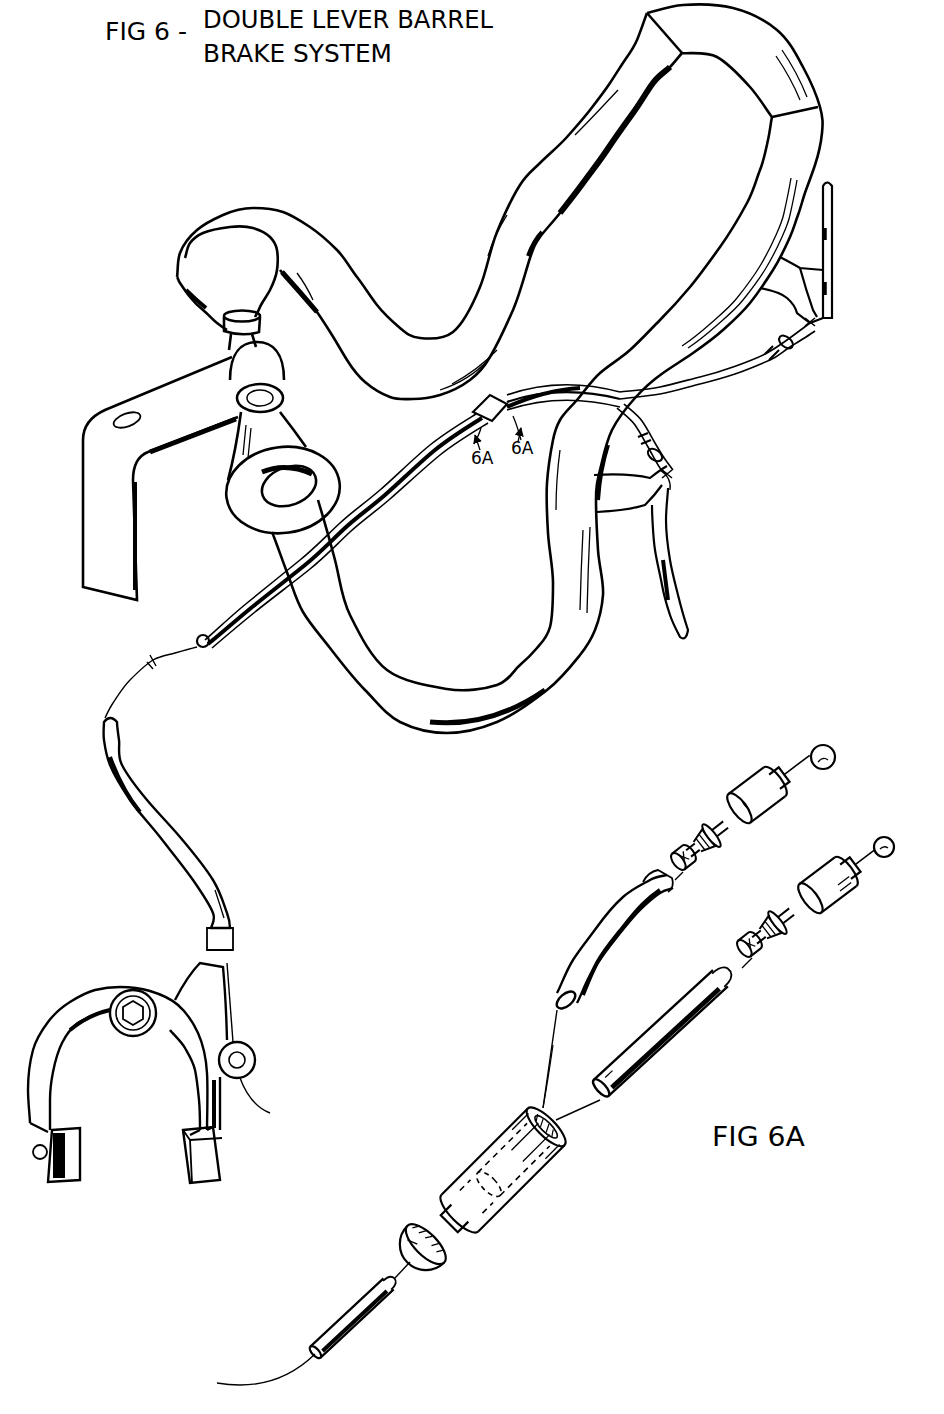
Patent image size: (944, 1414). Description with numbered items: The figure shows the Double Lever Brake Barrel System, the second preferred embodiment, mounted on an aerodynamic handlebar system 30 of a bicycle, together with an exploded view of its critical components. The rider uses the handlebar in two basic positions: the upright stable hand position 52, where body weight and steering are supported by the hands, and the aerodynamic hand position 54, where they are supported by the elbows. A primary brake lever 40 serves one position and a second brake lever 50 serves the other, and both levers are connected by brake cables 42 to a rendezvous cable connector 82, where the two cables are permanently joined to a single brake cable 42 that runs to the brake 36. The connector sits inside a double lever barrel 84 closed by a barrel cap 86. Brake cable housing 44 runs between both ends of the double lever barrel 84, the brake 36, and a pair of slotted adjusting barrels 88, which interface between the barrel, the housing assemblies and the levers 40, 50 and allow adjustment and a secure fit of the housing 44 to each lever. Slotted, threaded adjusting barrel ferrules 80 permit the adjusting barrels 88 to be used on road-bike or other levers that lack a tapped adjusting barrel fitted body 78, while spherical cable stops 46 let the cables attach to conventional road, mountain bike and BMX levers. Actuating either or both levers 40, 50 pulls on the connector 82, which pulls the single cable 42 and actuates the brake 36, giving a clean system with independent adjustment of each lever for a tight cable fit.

In FIG. 6, the aerodynamic handlebar system 30 is at (404, 168).
In FIG. 6, the brake 36 is at (86, 989).
In FIG. 6, the primary brake lever 40 is at (684, 562).
In FIG. 6A, the brake cable 42 is at (548, 1072).
In FIG. 6, the brake cable housing 44 is at (187, 857).
In FIG. 6A, the brake cable housing 44 is at (683, 1000).
In FIG. 6A, the spherical cable stop 46 is at (886, 836).
In FIG. 6, the brake lever 50 is at (838, 258).
In FIG. 6, the upright stable hand position 52 is at (417, 357).
In FIG. 6, the aerodynamic hand position 54 is at (787, 163).
In FIG. 6, the adjusting barrel fitted body 78 is at (818, 323).
In FIG. 6, the slotted, threaded adjusting barrel ferrule 80 is at (791, 341).
In FIG. 6A, the slotted, threaded adjusting barrel ferrule 80 is at (820, 873).
In FIG. 6A, the rendezvous cable connector 82 is at (500, 1180).
In FIG. 6, the double lever barrel 84 is at (490, 400).
In FIG. 6A, the double lever barrel 84 is at (507, 1172).
In FIG. 6A, the barrel cap 86 is at (437, 1267).
In FIG. 6, the slotted adjusting barrel 88 is at (777, 354).
In FIG. 6A, the slotted adjusting barrel 88 is at (753, 940).